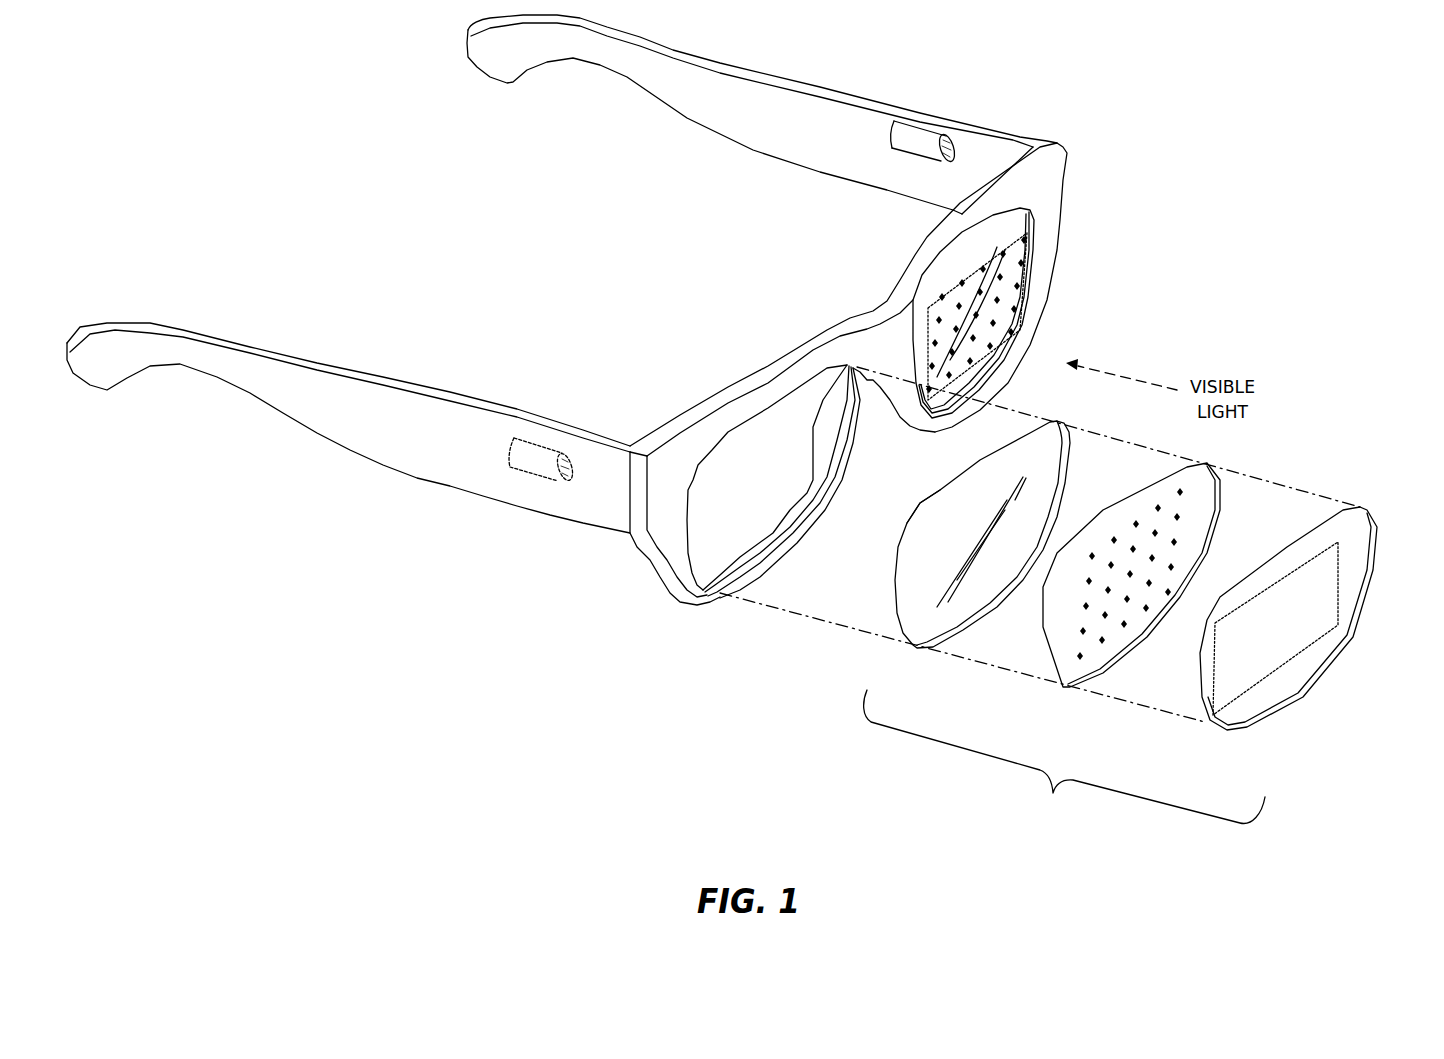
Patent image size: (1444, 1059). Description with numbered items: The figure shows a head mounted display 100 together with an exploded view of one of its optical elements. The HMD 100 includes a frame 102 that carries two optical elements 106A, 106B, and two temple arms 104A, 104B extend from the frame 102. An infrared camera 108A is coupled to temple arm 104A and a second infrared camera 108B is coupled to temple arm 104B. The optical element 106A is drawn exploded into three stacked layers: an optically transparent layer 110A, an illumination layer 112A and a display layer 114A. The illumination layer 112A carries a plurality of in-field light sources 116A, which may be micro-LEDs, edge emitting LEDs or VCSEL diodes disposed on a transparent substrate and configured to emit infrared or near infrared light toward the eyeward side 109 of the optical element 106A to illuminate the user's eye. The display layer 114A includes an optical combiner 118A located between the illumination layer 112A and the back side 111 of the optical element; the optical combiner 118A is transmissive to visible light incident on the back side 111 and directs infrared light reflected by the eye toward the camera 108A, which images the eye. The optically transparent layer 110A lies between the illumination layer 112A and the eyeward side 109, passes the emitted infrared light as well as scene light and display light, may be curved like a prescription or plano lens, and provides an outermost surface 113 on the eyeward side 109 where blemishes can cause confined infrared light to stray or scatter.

The head mounted display 100 is at (1294, 122).
The frame 102 is at (893, 358).
The temple arm 104A is at (447, 456).
The temple arm 104B is at (793, 123).
The optical element 106A is at (1053, 793).
The optical element 106B is at (1026, 300).
The infrared camera 108A is at (532, 455).
The infrared camera 108B is at (932, 135).
The eyeward side 109 is at (688, 355).
The optically transparent layer 110A is at (920, 645).
The back side 111 is at (1363, 659).
The illumination layer 112A is at (1062, 686).
The outermost surface 113 is at (935, 490).
The display layer 114A is at (1240, 727).
The in-field light source 116A is at (1176, 567).
The optical combiner 118A is at (1238, 637).